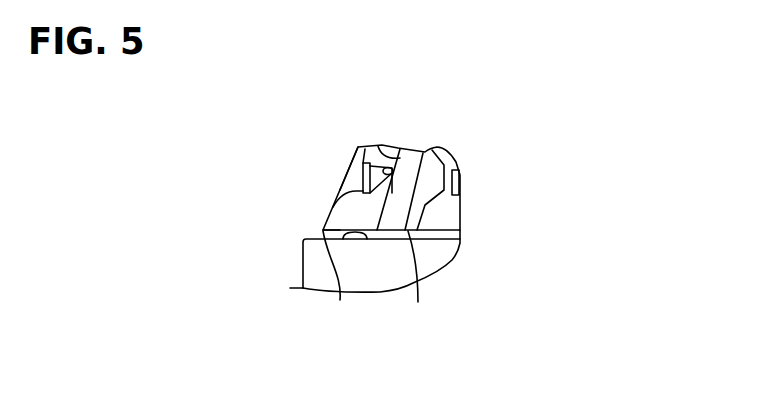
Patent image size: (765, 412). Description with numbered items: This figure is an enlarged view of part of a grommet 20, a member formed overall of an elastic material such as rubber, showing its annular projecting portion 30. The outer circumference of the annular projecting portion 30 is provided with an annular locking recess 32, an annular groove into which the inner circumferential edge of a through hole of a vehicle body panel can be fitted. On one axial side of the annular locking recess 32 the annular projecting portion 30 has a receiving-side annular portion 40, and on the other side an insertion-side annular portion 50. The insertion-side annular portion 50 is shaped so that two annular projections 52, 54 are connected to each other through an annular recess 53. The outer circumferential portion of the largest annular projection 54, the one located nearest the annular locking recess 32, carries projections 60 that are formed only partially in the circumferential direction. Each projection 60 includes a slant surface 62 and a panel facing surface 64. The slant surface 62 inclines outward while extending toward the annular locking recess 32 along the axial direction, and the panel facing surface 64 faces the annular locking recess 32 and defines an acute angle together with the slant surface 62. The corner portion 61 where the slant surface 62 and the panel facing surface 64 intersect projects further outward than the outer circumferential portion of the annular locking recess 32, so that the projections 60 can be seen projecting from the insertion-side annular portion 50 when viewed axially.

The grommet 20 is at (496, 168).
The annular projecting portion 30 is at (291, 271).
The annular locking recess 32 is at (368, 240).
The receiving-side annular portion 40 is at (318, 279).
The insertion-side annular portion 50 is at (326, 159).
The annular projection 52 is at (373, 150).
The annular recess 53 is at (396, 156).
The annular projection 54 is at (348, 200).
The projection 60 is at (340, 180).
The corner portion 61 is at (325, 228).
The slant surface 62 is at (348, 157).
The panel facing surface 64 is at (379, 282).